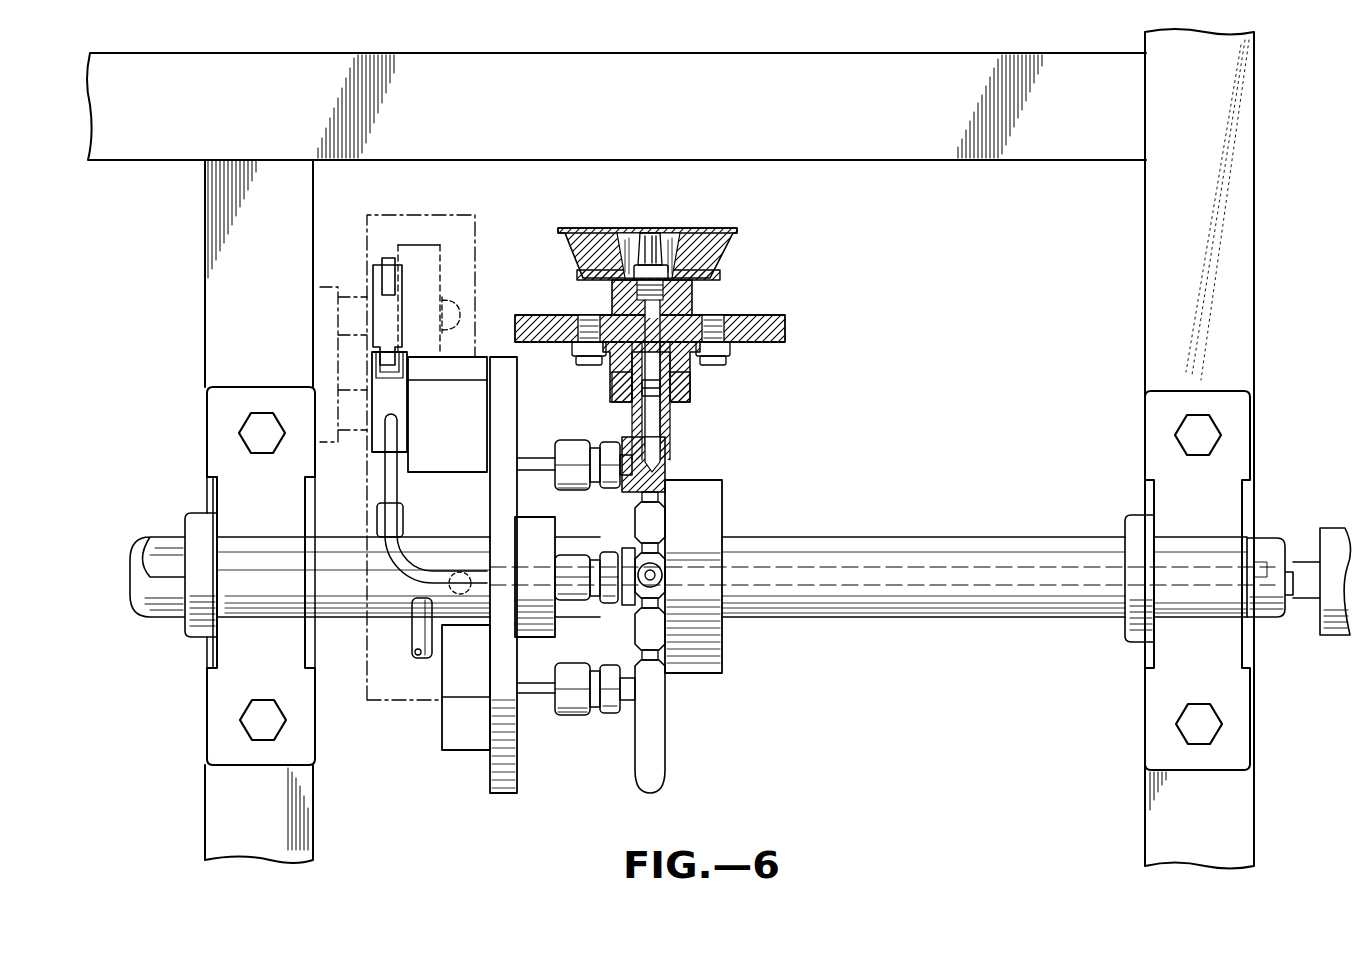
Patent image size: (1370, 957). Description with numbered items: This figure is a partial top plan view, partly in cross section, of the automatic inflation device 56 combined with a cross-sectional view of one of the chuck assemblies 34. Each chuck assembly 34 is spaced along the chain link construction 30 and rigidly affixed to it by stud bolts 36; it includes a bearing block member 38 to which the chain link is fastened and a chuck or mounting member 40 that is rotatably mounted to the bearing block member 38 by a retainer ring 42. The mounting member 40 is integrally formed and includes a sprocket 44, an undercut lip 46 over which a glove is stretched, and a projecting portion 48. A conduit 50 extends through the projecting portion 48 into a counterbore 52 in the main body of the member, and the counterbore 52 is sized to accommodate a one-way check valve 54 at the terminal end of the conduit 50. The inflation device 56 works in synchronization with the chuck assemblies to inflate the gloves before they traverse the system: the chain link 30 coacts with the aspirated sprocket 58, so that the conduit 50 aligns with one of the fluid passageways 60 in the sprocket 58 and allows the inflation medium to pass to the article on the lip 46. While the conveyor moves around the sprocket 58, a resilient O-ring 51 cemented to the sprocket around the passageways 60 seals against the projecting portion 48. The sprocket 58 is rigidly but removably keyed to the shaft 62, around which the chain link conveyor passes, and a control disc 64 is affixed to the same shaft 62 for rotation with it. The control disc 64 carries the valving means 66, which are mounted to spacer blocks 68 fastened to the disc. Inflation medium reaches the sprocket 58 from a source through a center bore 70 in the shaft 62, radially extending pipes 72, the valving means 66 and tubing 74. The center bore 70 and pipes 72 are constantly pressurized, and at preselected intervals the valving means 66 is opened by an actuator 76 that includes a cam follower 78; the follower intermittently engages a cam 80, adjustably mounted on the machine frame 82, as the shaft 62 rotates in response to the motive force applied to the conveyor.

The chain link construction 30 is at (690, 360).
The chuck assembly 34 is at (684, 344).
The stud bolt 36 is at (720, 322).
The bearing block member 38 is at (778, 342).
The mounting member 40 is at (717, 262).
The retainer ring 42 is at (615, 360).
The sprocket 44 is at (578, 277).
The undercut lip 46 is at (736, 229).
The projecting portion 48 is at (674, 390).
The conduit 50 is at (628, 378).
The O-ring 51 is at (663, 404).
The counterbore 52 is at (672, 244).
The check valve 54 is at (645, 238).
The automatic inflation device 56 is at (434, 750).
The aspirated sprocket 58 is at (660, 748).
The fluid passageway 60 is at (668, 440).
The shaft 62 is at (851, 612).
The control disc 64 is at (518, 772).
The valving means 66 is at (404, 410).
The spacer block 68 is at (462, 437).
The center bore 70 is at (781, 587).
The radially extending pipe 72 is at (403, 522).
The tubing 74 is at (398, 488).
The actuator 76 is at (385, 310).
The cam follower 78 is at (392, 262).
The cam 80 is at (470, 215).
The machine frame 82 is at (210, 207).